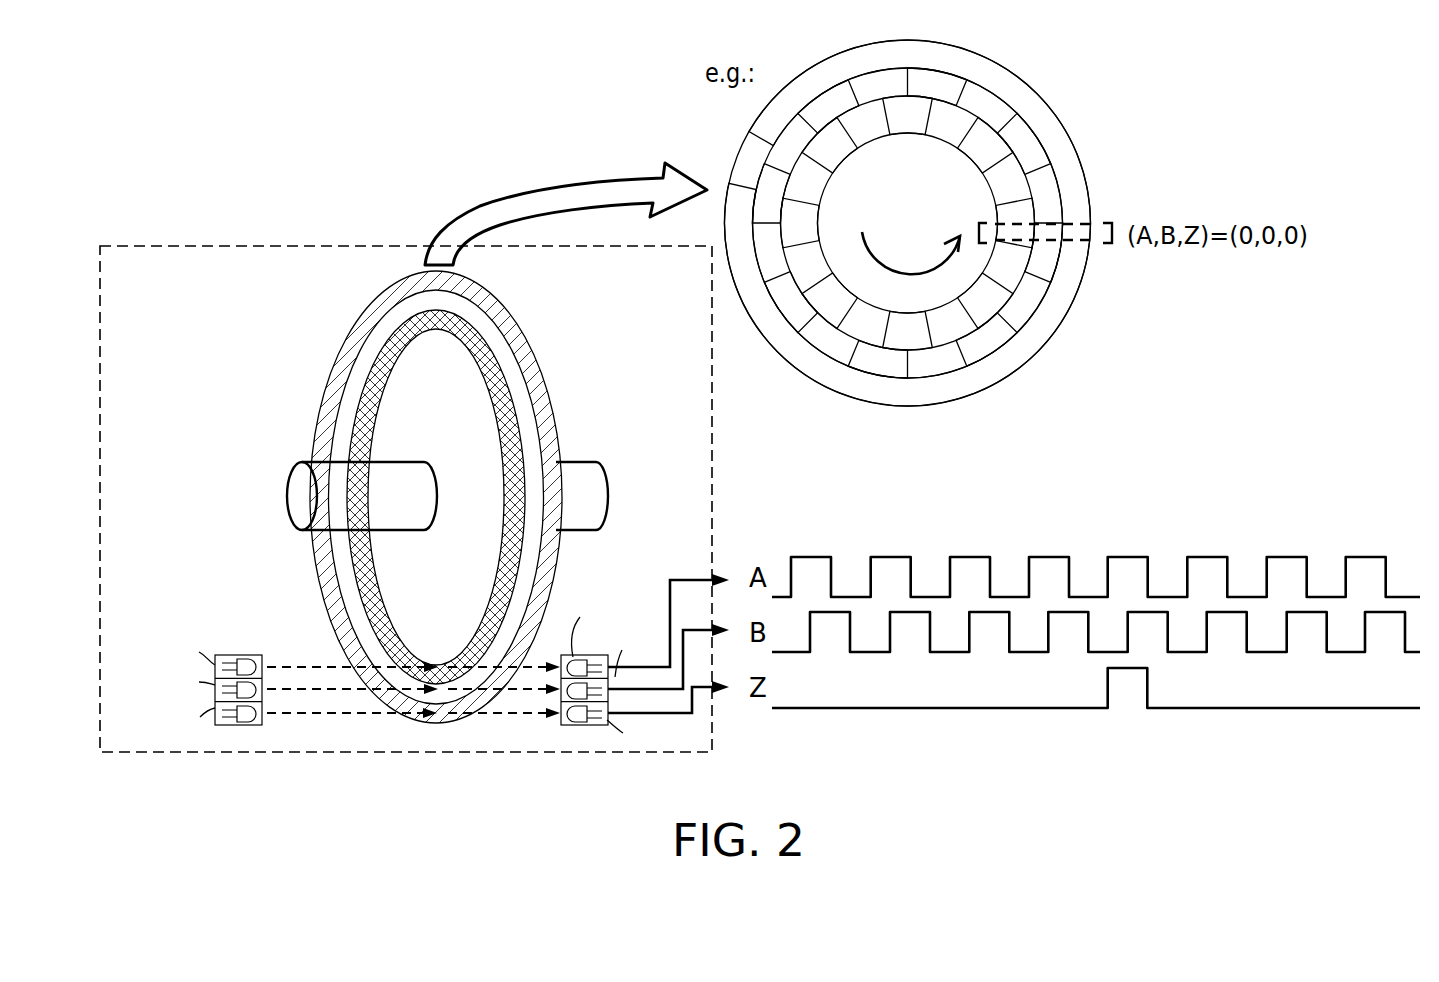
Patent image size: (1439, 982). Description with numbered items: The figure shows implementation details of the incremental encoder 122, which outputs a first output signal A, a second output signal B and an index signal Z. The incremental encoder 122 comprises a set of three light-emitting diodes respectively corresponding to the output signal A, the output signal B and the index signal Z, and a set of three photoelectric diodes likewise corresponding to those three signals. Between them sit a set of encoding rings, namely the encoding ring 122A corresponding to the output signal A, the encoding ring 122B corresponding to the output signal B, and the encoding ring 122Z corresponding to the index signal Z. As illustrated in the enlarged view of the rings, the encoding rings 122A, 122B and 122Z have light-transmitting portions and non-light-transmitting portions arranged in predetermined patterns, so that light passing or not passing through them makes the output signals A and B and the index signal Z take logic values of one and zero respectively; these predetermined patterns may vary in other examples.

The incremental encoder 122 is at (178, 243).
The encoding ring 122A is at (1010, 171).
The encoding ring 122B is at (1043, 185).
The encoding ring 122Z is at (1075, 191).